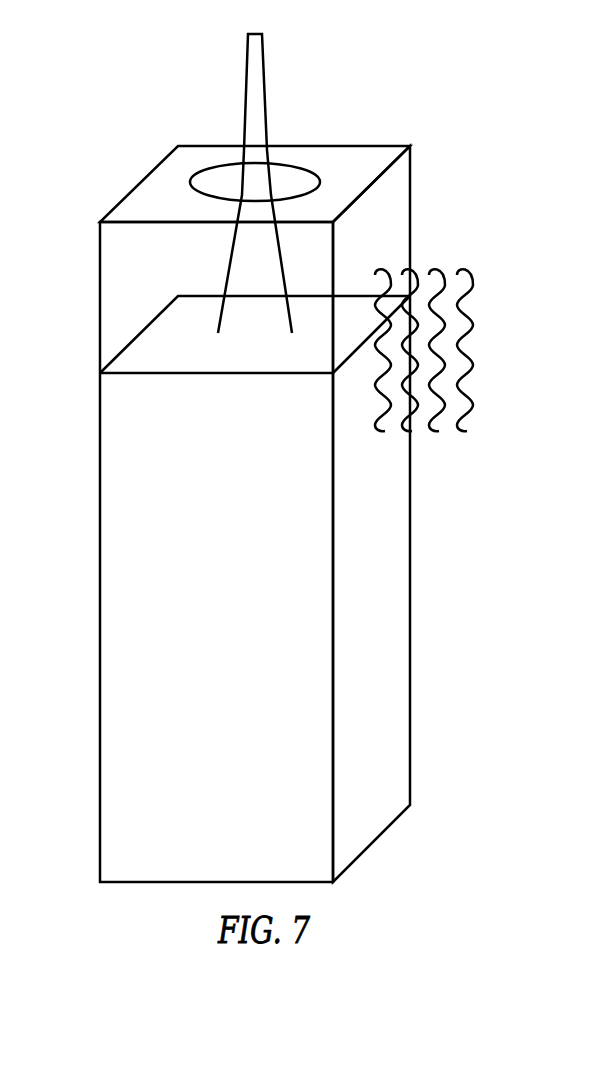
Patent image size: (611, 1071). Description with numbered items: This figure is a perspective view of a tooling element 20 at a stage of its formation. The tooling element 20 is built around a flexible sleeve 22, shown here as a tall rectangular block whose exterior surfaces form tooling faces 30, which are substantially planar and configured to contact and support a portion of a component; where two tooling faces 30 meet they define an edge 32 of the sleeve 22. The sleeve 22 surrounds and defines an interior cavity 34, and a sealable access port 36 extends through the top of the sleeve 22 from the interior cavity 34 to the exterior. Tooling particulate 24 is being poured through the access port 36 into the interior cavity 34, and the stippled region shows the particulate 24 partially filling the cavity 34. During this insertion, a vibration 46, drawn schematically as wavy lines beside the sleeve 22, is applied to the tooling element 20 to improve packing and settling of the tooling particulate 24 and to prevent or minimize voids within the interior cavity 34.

The tooling element 20 is at (291, 455).
The sleeve 22 is at (395, 187).
The tooling particulate 24 is at (253, 52).
The tooling face 30 is at (170, 436).
The edge 32 is at (335, 743).
The interior cavity 34 is at (114, 320).
The sealable access port 36 is at (296, 165).
The vibration 46 is at (455, 258).